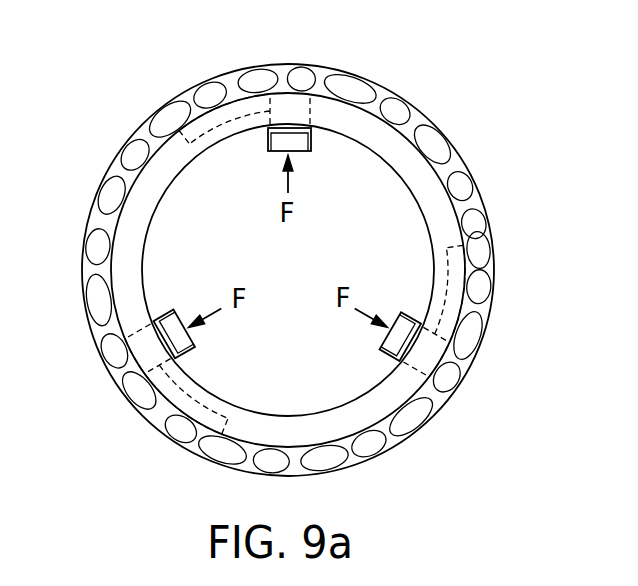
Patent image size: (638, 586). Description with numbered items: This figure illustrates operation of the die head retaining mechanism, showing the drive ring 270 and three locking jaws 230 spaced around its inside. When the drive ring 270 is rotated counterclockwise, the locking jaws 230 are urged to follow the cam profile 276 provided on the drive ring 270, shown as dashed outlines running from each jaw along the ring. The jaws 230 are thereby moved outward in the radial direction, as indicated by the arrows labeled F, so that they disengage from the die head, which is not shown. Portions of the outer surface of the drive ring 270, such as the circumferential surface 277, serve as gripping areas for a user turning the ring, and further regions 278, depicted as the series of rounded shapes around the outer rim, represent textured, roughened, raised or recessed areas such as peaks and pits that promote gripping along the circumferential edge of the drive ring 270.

The locking jaw 230 is at (292, 142).
The drive ring 270 is at (407, 101).
The cam profile 276 is at (178, 131).
The circumferential surface 277 is at (479, 193).
The gripping regions 278 is at (458, 347).